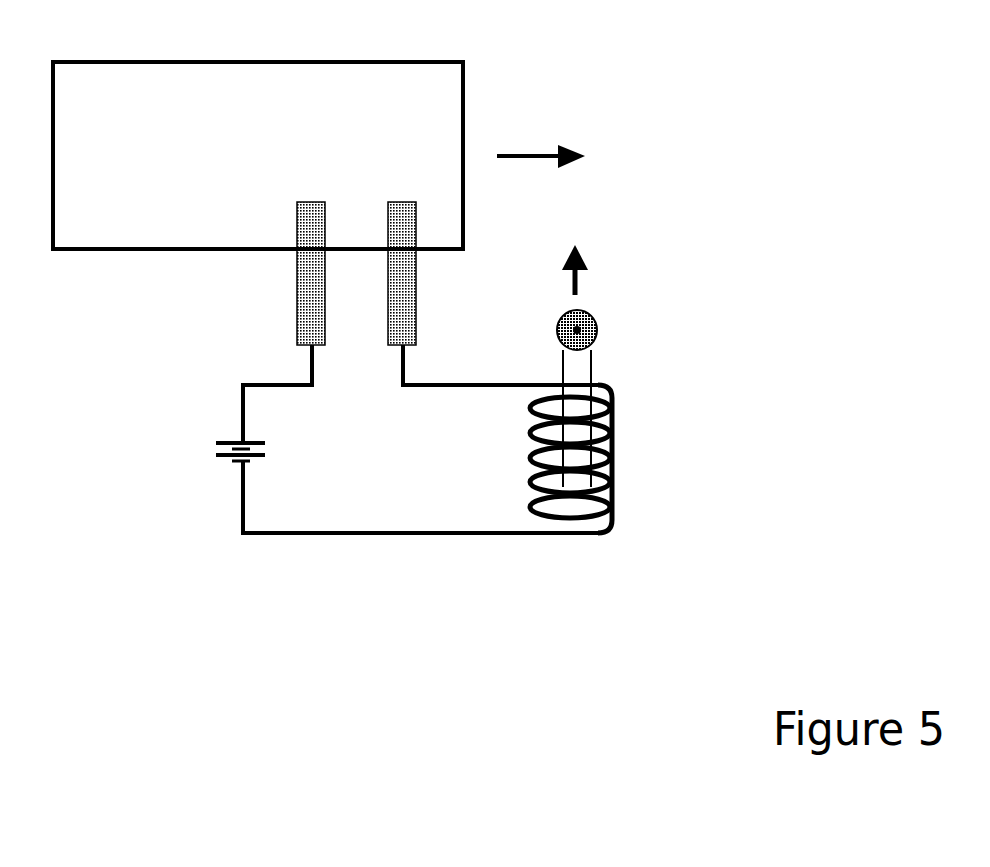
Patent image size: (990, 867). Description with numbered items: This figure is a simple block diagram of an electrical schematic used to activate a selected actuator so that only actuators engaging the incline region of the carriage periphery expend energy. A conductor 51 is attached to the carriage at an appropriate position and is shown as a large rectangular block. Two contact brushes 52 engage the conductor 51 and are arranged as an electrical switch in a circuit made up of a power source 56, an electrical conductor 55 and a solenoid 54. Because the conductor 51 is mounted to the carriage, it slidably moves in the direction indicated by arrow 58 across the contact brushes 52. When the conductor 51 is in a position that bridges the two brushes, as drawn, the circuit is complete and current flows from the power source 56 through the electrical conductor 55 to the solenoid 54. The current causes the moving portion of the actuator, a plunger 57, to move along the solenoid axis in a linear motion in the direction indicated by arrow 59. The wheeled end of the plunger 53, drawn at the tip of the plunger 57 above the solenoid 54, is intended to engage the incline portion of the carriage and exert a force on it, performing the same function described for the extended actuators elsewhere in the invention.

The conductor 51 is at (465, 120).
The contact brushes 52 is at (311, 323).
The wheeled end of the plunger 53 is at (597, 328).
The solenoid 54 is at (615, 495).
The electrical conductor 55 is at (500, 537).
The power source 56 is at (220, 458).
The plunger 57 is at (582, 375).
The arrow 58 is at (572, 148).
The arrow 59 is at (583, 255).